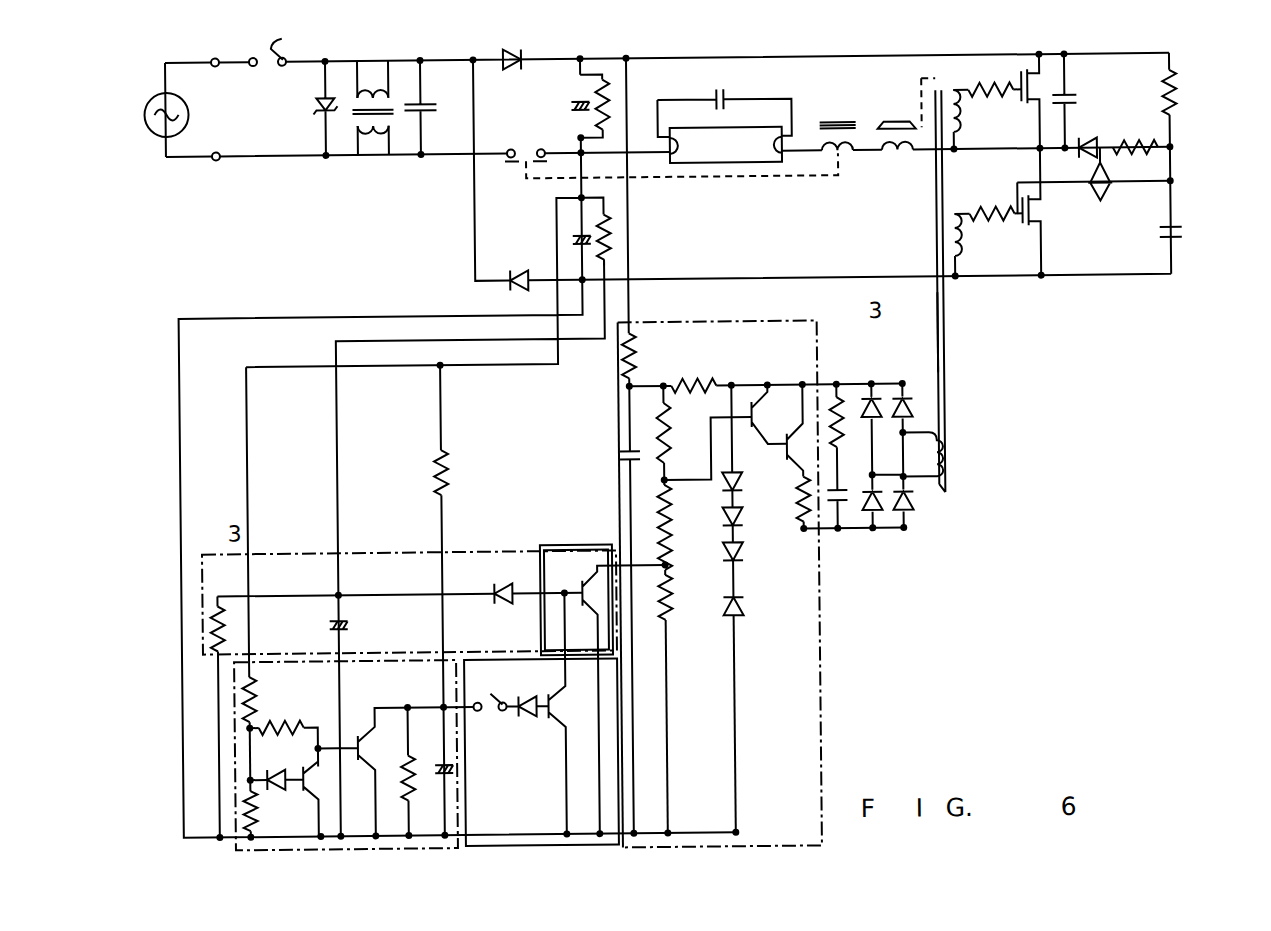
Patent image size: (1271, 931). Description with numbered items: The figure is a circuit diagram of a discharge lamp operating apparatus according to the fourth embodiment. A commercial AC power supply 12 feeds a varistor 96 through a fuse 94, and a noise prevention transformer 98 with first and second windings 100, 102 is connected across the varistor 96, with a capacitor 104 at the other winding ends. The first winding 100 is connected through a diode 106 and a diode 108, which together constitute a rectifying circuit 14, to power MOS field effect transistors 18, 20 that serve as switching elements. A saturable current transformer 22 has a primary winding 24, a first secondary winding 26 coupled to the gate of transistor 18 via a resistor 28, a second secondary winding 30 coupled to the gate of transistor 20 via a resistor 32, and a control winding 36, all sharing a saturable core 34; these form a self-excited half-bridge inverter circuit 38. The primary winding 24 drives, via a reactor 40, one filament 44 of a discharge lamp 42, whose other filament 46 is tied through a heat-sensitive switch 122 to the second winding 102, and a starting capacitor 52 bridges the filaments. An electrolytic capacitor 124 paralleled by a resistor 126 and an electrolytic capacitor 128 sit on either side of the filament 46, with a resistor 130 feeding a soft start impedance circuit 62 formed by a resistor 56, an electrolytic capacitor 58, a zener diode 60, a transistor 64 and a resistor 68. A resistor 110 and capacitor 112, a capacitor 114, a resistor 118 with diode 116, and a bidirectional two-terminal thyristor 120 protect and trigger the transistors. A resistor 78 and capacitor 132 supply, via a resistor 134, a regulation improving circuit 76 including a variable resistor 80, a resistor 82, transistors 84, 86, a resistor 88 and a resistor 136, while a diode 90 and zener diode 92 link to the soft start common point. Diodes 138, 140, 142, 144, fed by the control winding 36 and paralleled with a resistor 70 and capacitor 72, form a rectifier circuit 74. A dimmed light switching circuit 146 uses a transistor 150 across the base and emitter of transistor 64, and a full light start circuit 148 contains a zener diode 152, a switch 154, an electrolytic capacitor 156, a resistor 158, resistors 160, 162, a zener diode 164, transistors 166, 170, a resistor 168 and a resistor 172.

The commercial AC power supply 12 is at (147, 102).
The rectifying circuit 14 is at (487, 80).
The field effect transistor 18 is at (1020, 77).
The field effect transistor 20 is at (1021, 233).
The saturable current transformer 22 is at (988, 312).
The primary winding 24 is at (897, 161).
The first secondary winding 26 is at (958, 126).
The resistor 28 is at (972, 90).
The second secondary winding 30 is at (948, 240).
The resistor 32 is at (1002, 211).
The saturable core 34 is at (943, 365).
The control winding 36 is at (943, 463).
The inverter circuit 38 is at (928, 142).
The reactor 40 is at (836, 126).
The discharge lamp 42 is at (726, 174).
The filament 44 is at (776, 175).
The filament 46 is at (673, 175).
The starting capacitor 52 is at (727, 96).
The resistor 56 is at (208, 640).
The electrolytic capacitor 58 is at (330, 625).
The zener diode 60 is at (503, 590).
The impedance circuit 62 is at (220, 537).
The transistor 64 is at (577, 592).
The resistor 68 is at (670, 610).
The resistor 70 is at (898, 469).
The capacitor 72 is at (836, 540).
The rectifier circuit 74 is at (946, 531).
The regulation improving circuit 76 is at (787, 324).
The resistor 78 is at (634, 357).
The variable resistor 80 is at (666, 495).
The resistor 82 is at (692, 392).
The transistor 84 is at (749, 405).
The transistor 86 is at (784, 445).
The resistor 88 is at (796, 522).
The diode 90 is at (741, 522).
The zener diode 92 is at (742, 613).
The fuse 94 is at (279, 42).
The varistor 96 is at (327, 95).
The transformer 98 is at (378, 113).
The first winding 100 is at (368, 95).
The second winding 102 is at (369, 134).
The capacitor 104 is at (432, 98).
The diode 106 is at (514, 53).
The diode 108 is at (513, 275).
The resistor 110 is at (1175, 110).
The capacitor 112 is at (1185, 237).
The capacitor 114 is at (1068, 106).
The diode 116 is at (1084, 146).
The resistor 118 is at (1137, 157).
The bidirectional two-terminal thyristor 120 is at (1108, 208).
The heat-sensitive switch 122 is at (511, 147).
The electrolytic capacitor 124 is at (573, 108).
The resistor 126 is at (640, 86).
The electrolytic capacitor 128 is at (573, 241).
The resistor 130 is at (612, 239).
The capacitor 132 is at (618, 461).
The resistor 134 is at (674, 413).
The resistor 136 is at (664, 572).
The diode 138 is at (850, 453).
The diode 140 is at (866, 538).
The diode 142 is at (900, 400).
The diode 144 is at (901, 538).
The dimmed light switching circuit 146 is at (552, 552).
The full light start circuit 148 is at (230, 694).
The transistor 150 is at (543, 725).
The zener diode 152 is at (515, 726).
The switch 154 is at (485, 700).
The electrolytic capacitor 156 is at (440, 768).
The resistor 158 is at (444, 478).
The resistor 160 is at (252, 702).
The resistor 162 is at (250, 818).
The zener diode 164 is at (292, 793).
The transistor 166 is at (305, 771).
The resistor 168 is at (282, 730).
The transistor 170 is at (354, 748).
The resistor 172 is at (407, 788).